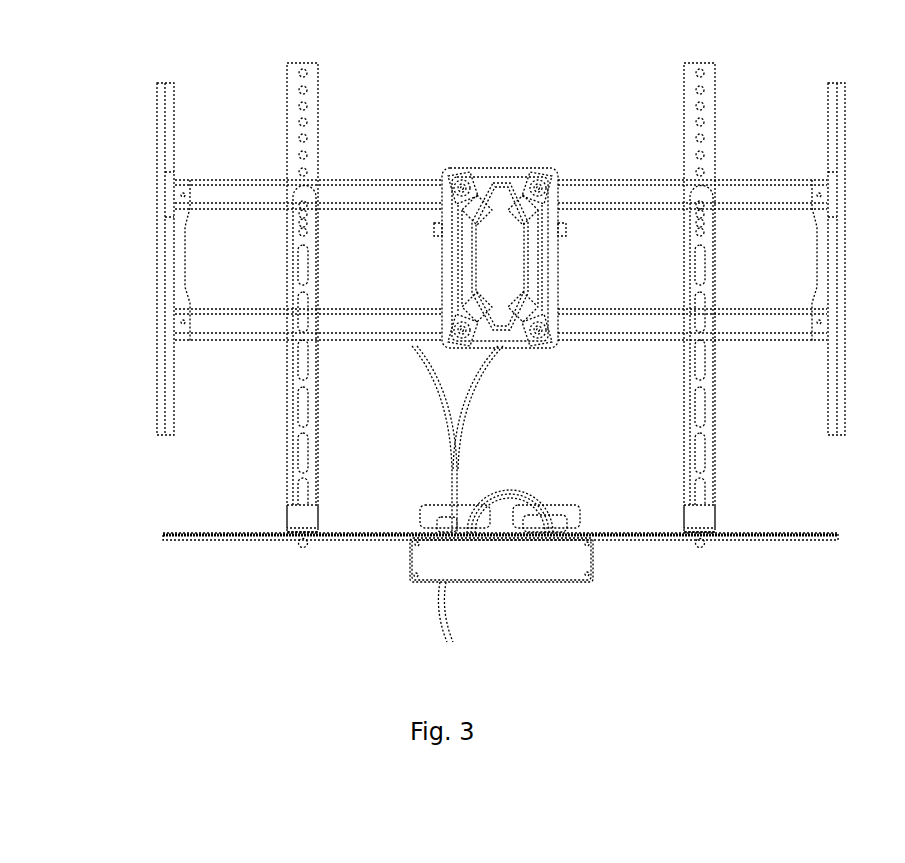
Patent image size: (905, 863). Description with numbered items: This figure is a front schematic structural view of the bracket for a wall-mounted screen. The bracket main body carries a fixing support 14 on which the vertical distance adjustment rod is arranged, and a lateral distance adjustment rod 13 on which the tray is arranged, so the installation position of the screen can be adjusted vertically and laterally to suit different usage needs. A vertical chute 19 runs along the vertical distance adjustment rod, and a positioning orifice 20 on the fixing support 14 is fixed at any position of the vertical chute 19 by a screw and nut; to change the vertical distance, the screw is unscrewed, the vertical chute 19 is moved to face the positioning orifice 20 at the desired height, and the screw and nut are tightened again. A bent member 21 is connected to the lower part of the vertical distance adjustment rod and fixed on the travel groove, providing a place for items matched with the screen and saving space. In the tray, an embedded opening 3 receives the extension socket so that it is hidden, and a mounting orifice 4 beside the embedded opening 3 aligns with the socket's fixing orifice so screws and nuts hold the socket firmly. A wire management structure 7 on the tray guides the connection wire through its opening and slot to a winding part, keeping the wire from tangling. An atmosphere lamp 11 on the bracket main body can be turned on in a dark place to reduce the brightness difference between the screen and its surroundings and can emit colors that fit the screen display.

The embedded opening 3 is at (450, 556).
The mounting orifice 4 is at (597, 580).
The wire management structure 7 is at (572, 515).
The atmosphere lamp 11 is at (163, 200).
The lateral distance adjustment rod 13 is at (190, 540).
The fixing support 14 is at (497, 238).
The vertical chute 19 is at (300, 368).
The positioning orifice 20 is at (303, 105).
The bent member 21 is at (300, 517).